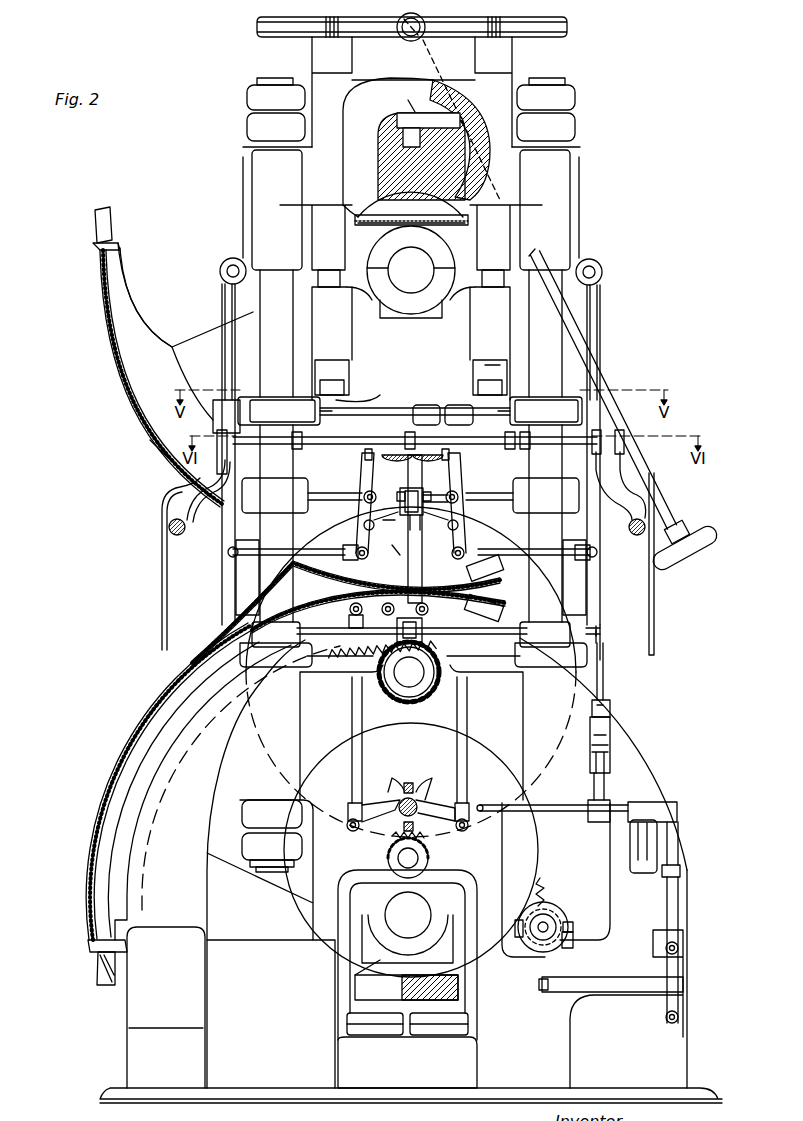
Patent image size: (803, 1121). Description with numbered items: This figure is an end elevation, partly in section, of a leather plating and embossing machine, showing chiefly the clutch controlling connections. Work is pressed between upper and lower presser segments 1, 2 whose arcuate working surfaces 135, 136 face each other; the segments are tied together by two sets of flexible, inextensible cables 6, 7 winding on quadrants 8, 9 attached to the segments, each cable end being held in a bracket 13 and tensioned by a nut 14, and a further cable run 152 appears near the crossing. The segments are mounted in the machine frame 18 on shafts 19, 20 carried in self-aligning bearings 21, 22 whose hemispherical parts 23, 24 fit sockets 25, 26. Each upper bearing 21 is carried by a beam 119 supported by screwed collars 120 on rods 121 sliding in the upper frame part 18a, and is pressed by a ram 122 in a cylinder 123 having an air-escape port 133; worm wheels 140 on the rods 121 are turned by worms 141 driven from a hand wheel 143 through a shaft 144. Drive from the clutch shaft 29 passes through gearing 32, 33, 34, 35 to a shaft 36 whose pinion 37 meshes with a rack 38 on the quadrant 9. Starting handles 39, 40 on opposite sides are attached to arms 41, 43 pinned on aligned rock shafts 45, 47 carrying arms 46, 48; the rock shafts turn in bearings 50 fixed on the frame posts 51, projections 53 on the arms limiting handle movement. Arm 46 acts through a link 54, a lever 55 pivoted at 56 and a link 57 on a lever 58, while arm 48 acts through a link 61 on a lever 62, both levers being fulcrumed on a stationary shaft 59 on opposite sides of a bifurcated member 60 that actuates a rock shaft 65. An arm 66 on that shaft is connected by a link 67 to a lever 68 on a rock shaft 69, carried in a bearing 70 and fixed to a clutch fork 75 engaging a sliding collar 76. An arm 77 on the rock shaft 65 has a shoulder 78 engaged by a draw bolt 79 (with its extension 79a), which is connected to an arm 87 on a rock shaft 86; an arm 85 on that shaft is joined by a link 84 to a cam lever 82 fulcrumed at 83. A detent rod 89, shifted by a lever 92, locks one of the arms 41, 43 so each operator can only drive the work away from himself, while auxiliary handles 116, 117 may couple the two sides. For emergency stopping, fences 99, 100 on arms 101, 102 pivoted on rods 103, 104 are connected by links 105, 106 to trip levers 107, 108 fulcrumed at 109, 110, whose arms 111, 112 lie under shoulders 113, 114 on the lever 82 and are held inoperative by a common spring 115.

The upper presser segment 1 is at (208, 340).
The lower presser segment 2 is at (225, 852).
The cables 6 is at (136, 415).
The cables 7 is at (146, 735).
The quadrant 8 is at (140, 440).
The quadrant 9 is at (130, 780).
The bracket 13 is at (88, 950).
The nut 14 is at (100, 983).
The machine frame 18 is at (632, 763).
The upper part of machine frame 18a is at (492, 242).
The shaft 19 is at (418, 280).
The shaft 20 is at (414, 912).
The bearings 21 is at (377, 254).
The bearings 22 is at (447, 960).
The hemispherical part 23 is at (400, 212).
The hemispherical part 24 is at (450, 993).
The socket 25 is at (392, 195).
The socket 26 is at (440, 1002).
The clutch shaft 29 is at (549, 922).
The gearing 32 is at (540, 903).
The gearing 33 is at (466, 985).
The gearing 34 is at (430, 858).
The gearing 35 is at (260, 733).
The shaft 36 is at (410, 680).
The pinion 37 is at (398, 690).
The rack 38 is at (182, 768).
The starting handle 39 is at (169, 528).
The starting handle 40 is at (647, 522).
The arm 41 is at (208, 492).
The arm 43 is at (614, 517).
The rock shaft 45 is at (386, 408).
The arm 46 is at (431, 405).
The rock shaft 47 is at (492, 385).
The arm 48 is at (462, 405).
The bearings 50 is at (522, 396).
The posts 51 is at (540, 316).
The projections 53 is at (236, 402).
The link 54 is at (425, 527).
The lever 55 is at (350, 612).
The pivot 56 is at (384, 533).
The link 57 is at (355, 712).
The lever 58 is at (373, 808).
The stationary shaft 59 is at (384, 834).
The bifurcated member 60 is at (414, 800).
The link 61 is at (467, 717).
The lever 62 is at (436, 810).
The rock shaft 65 is at (552, 806).
The arm 66 is at (672, 836).
The link 67 is at (683, 880).
The lever 68 is at (676, 930).
The rock shaft 69 is at (540, 990).
The bearing 70 is at (603, 995).
The clutch fork 75 is at (573, 945).
The collar 76 is at (573, 924).
The arm 77 is at (602, 803).
The shoulder 78 is at (592, 746).
The draw bolt 79 is at (609, 712).
The rod 79a is at (604, 671).
The lever 82 is at (406, 520).
The fulcrum 83 is at (406, 493).
The link 84 is at (422, 573).
The arm 85 is at (422, 627).
The rock shaft 86 is at (490, 636).
The arm 87 is at (601, 633).
The slide rod 89 is at (330, 446).
The lever 92 is at (410, 467).
The fence 99 is at (238, 585).
The fence 100 is at (578, 600).
The arm 101 is at (228, 352).
The arm 102 is at (600, 366).
The shaft 103 is at (230, 265).
The shaft 104 is at (596, 268).
The link 105 is at (273, 549).
The link 106 is at (548, 549).
The trip lever 107 is at (371, 478).
The trip lever 108 is at (452, 480).
The fulcrum 109 is at (362, 498).
The fulcrum 110 is at (464, 508).
The arm 111 is at (365, 524).
The arm 112 is at (456, 528).
The shoulder 113 is at (398, 553).
The shoulder 114 is at (445, 492).
The spring 115 is at (385, 455).
The auxiliary handle 116 is at (162, 606).
The auxiliary handle 117 is at (656, 613).
The beam 119 is at (381, 386).
The screwed collars 120 is at (507, 395).
The rods 121 is at (498, 286).
The ram 122 is at (458, 172).
The cylinder 123 is at (358, 140).
The port 133 is at (417, 110).
The working surface 135 is at (163, 483).
The working surface 136 is at (140, 718).
The worm wheels 140 is at (540, 30).
The worms 141 is at (407, 36).
The hand wheel 143 is at (693, 552).
The lever 144 is at (641, 465).
The belt 152 is at (192, 660).